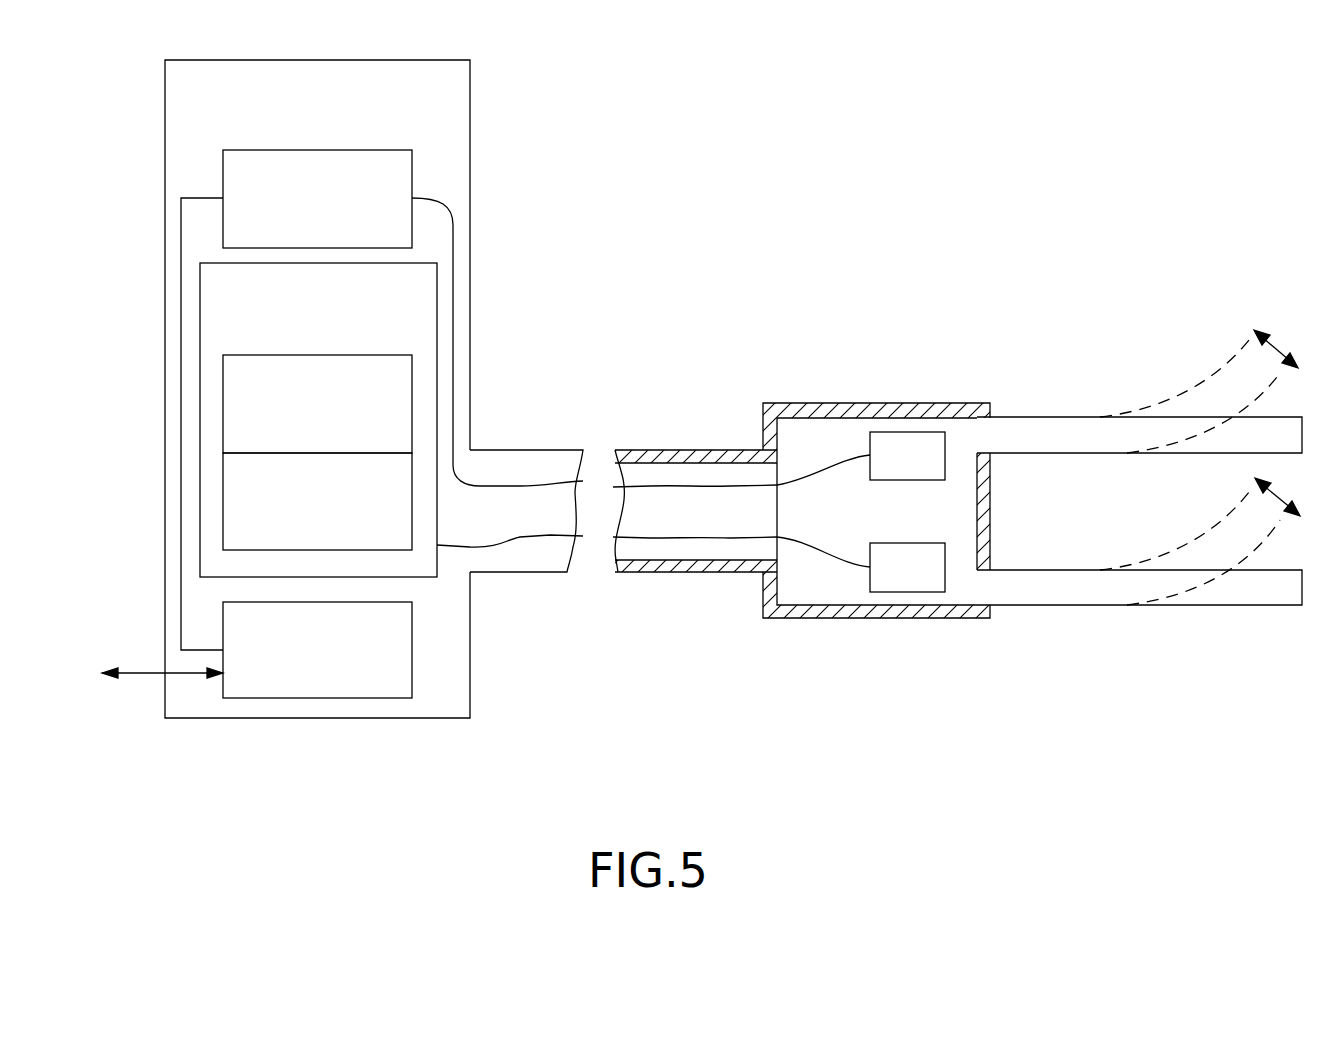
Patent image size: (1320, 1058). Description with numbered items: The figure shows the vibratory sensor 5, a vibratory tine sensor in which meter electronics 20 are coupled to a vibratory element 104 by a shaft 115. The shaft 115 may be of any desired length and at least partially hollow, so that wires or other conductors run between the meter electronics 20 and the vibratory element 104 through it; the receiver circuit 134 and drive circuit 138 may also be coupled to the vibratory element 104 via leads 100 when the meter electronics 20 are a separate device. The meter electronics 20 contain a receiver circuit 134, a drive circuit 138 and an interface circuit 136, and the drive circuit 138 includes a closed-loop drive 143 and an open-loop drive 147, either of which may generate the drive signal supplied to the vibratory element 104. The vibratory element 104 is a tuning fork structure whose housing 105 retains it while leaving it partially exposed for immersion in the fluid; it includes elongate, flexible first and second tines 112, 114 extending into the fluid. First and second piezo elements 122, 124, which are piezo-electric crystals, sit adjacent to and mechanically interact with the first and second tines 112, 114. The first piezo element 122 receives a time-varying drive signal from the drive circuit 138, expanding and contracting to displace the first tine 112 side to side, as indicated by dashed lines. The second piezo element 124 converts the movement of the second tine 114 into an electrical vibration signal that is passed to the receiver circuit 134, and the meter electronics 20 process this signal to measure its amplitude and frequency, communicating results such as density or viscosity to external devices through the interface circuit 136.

The vibratory sensor 5 is at (376, 772).
The meter electronics 20 is at (303, 126).
The leads 100 is at (148, 673).
The vibratory element 104 is at (840, 532).
The housing 105 is at (820, 403).
The first tine 112 is at (1038, 605).
The second tine 114 is at (1027, 417).
The shaft 115 is at (522, 450).
The first piezo element 122 is at (903, 592).
The second piezo element 124 is at (903, 432).
The receiver circuit 134 is at (298, 237).
The interface circuit 136 is at (298, 691).
The drive circuit 138 is at (298, 329).
The closed-loop drive 143 is at (299, 444).
The open-loop drive 147 is at (299, 542).